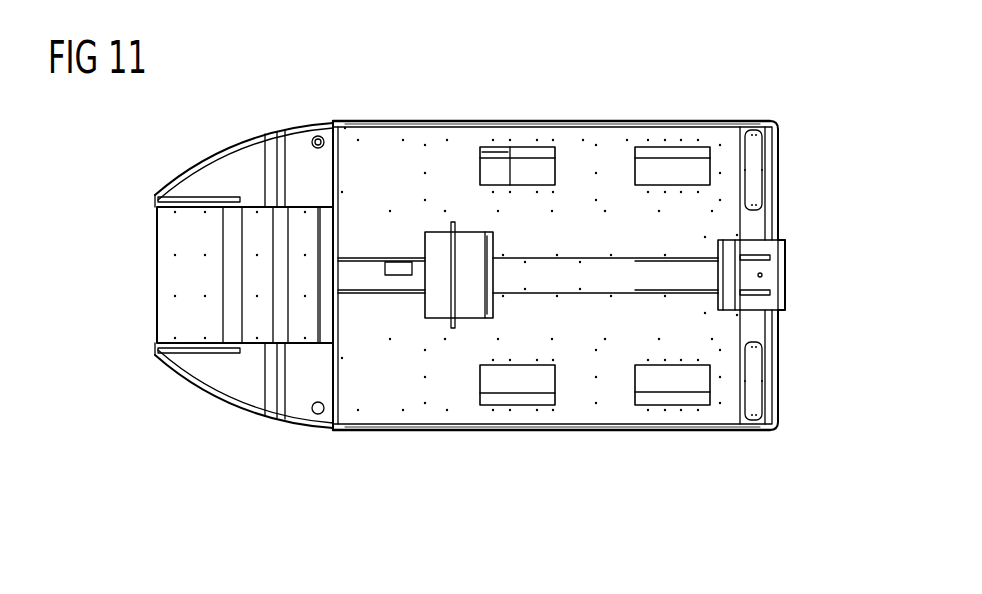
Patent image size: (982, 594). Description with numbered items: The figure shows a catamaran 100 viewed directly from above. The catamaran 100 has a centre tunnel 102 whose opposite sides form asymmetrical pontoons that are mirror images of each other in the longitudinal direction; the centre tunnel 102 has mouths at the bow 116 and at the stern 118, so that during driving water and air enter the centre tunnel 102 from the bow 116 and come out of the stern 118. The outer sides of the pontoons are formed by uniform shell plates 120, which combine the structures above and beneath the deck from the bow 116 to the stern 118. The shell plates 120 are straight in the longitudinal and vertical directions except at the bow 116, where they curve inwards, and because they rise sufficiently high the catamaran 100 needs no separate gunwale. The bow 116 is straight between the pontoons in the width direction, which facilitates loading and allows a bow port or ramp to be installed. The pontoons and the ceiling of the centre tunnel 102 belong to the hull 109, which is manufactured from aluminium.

The catamaran 100 is at (458, 502).
The centre tunnel 102 is at (133, 327).
The hull 109 is at (370, 448).
The bow 116 is at (146, 275).
The stern 118 is at (793, 277).
The shell plates 120 is at (602, 118).